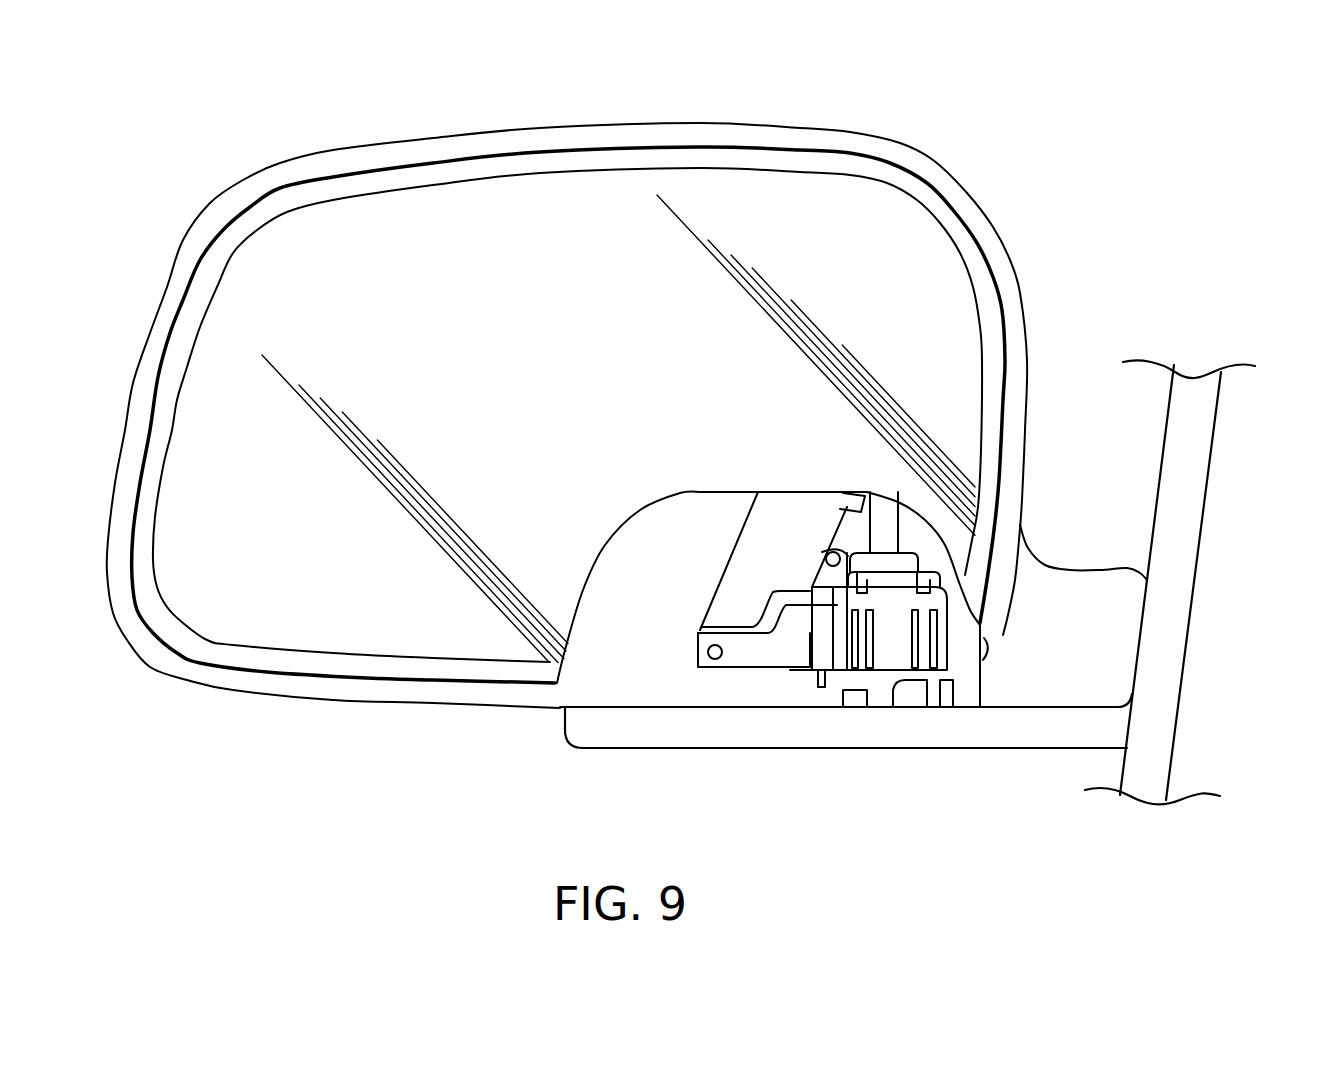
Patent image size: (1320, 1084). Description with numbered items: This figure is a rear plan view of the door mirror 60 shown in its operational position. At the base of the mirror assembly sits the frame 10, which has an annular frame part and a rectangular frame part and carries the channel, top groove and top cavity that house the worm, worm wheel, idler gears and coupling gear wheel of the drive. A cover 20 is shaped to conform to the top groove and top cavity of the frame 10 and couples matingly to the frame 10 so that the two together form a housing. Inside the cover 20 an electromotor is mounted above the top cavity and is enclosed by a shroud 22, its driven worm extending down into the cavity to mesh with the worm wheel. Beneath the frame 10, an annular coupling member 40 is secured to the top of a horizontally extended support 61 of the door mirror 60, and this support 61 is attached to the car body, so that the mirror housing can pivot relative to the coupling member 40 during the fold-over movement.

The frame 10 is at (955, 633).
The cover 20 is at (895, 575).
The shroud 22 is at (767, 532).
The coupling member 40 is at (833, 688).
The door mirror 60 is at (862, 150).
The support 61 is at (935, 732).